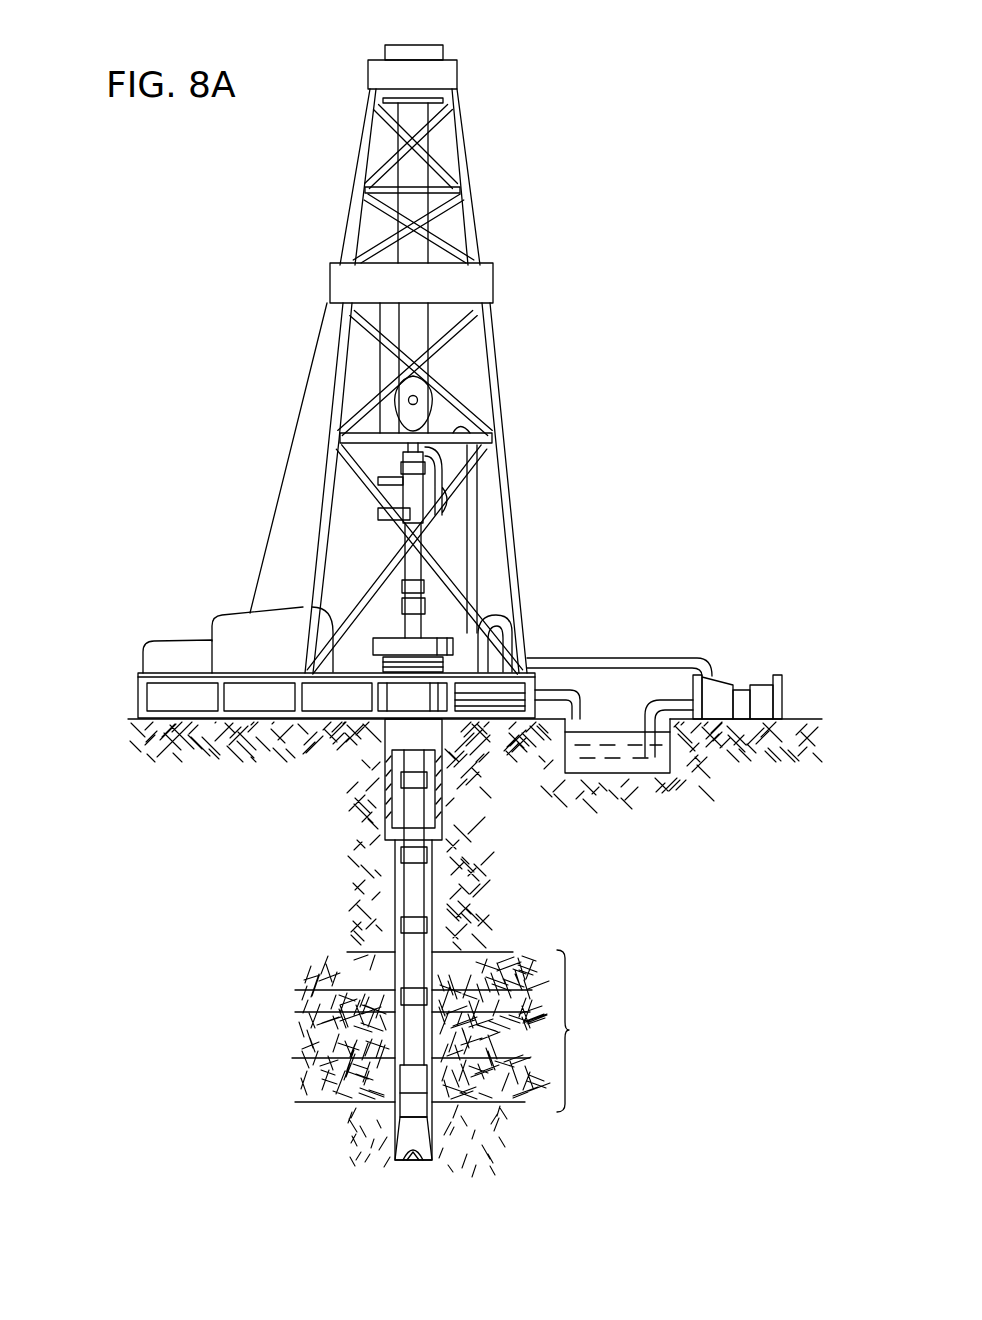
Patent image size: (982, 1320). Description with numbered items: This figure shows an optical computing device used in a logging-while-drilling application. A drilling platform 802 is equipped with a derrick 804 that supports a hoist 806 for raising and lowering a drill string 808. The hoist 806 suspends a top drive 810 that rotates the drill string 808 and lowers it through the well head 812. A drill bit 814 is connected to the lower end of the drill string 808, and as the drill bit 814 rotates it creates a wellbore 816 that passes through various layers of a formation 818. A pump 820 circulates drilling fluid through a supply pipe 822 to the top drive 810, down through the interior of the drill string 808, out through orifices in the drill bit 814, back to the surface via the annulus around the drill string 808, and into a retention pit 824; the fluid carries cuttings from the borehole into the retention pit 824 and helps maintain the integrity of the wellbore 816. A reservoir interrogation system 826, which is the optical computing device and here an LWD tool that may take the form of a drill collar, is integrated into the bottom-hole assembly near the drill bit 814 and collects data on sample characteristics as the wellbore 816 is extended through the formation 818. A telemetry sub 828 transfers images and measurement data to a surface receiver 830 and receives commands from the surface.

The drilling platform 802 is at (138, 693).
The derrick 804 is at (475, 223).
The hoist 806 is at (426, 400).
The drill string 808 is at (423, 902).
The top drive 810 is at (415, 490).
The well head 812 is at (428, 637).
The drill bit 814 is at (437, 1150).
The wellbore 816 is at (435, 912).
The formation 818 is at (456, 1031).
The pump 820 is at (715, 697).
The supply pipe 822 is at (627, 658).
The retention pit 824 is at (573, 772).
The reservoir interrogation system 826 is at (395, 1118).
The telemetry sub 828 is at (407, 1080).
The surface receiver 830 is at (418, 585).